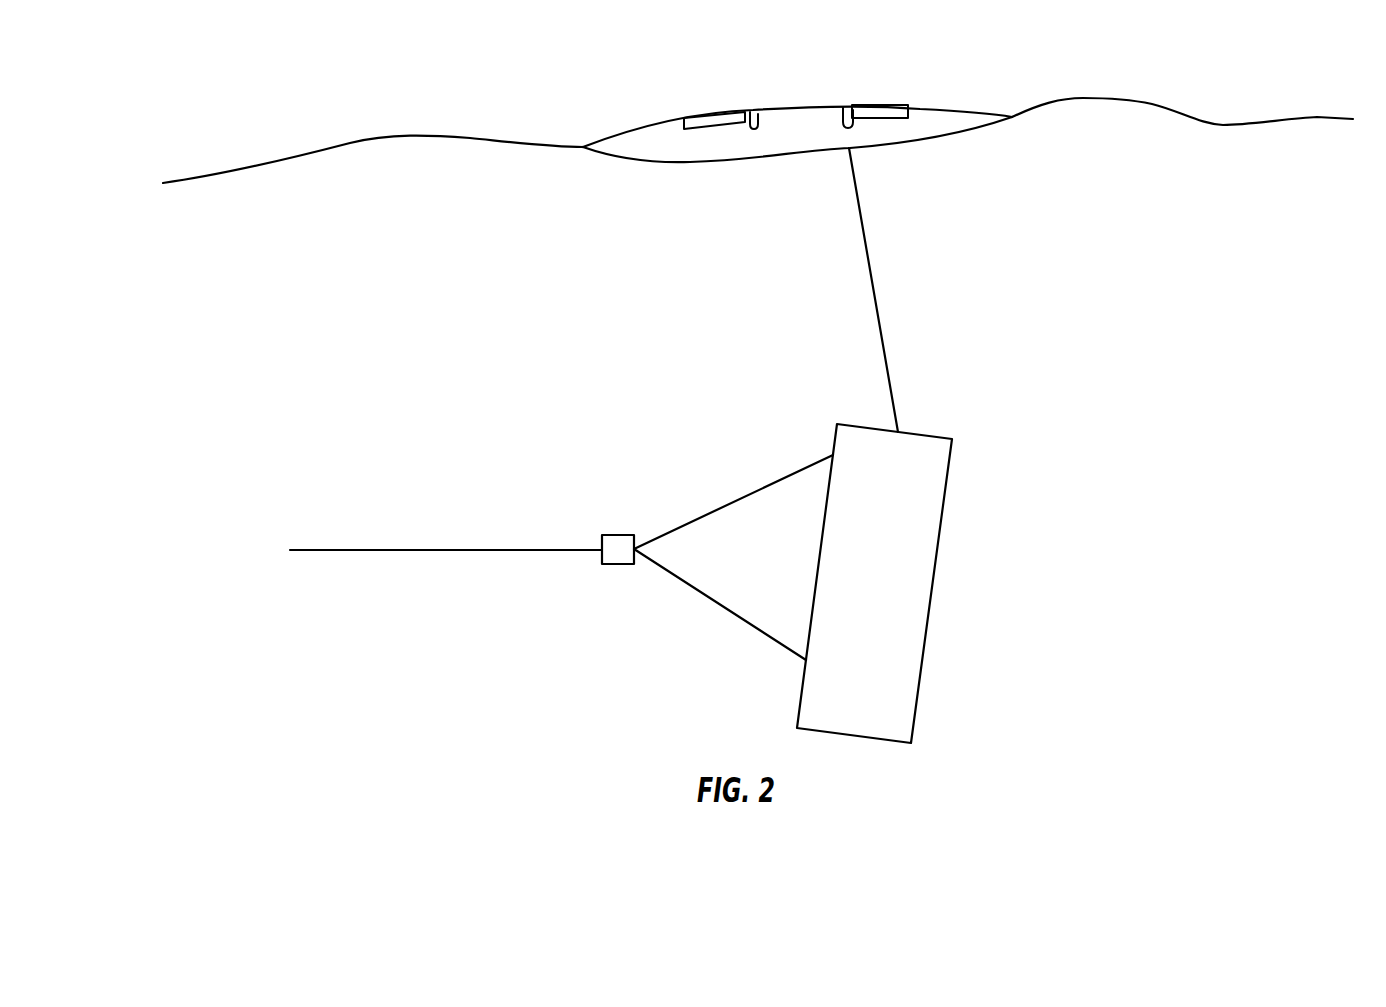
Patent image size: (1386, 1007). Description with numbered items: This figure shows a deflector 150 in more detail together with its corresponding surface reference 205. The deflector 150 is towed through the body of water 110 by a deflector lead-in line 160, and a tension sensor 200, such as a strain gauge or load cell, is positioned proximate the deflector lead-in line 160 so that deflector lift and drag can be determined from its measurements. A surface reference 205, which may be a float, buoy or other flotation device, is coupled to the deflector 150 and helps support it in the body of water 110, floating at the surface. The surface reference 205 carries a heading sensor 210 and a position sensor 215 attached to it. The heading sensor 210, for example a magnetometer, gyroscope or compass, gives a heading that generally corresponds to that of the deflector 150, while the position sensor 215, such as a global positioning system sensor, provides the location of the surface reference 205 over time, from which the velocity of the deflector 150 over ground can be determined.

The body of water 110 is at (1191, 211).
The deflector 150 is at (947, 487).
The deflector lead-in line 160 is at (490, 548).
The tension sensor 200 is at (617, 535).
The surface reference 205 is at (965, 108).
The heading sensor 210 is at (751, 112).
The position sensor 215 is at (844, 107).